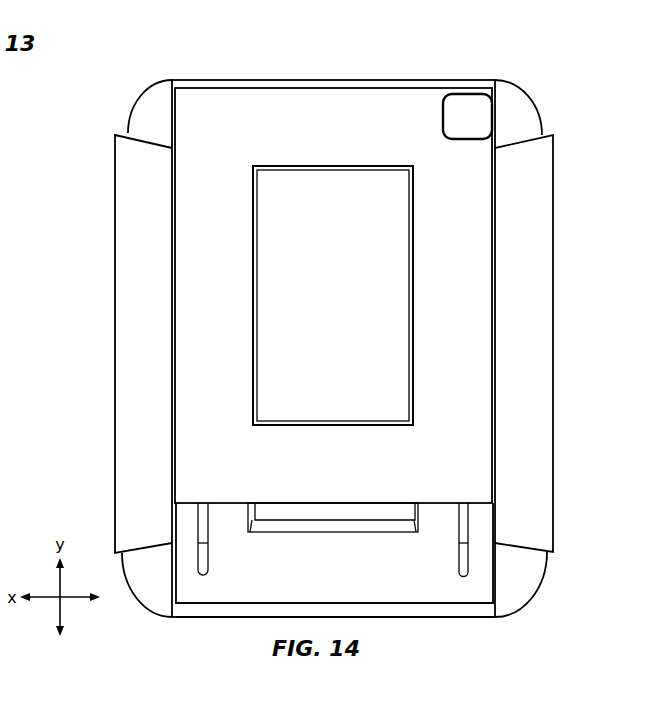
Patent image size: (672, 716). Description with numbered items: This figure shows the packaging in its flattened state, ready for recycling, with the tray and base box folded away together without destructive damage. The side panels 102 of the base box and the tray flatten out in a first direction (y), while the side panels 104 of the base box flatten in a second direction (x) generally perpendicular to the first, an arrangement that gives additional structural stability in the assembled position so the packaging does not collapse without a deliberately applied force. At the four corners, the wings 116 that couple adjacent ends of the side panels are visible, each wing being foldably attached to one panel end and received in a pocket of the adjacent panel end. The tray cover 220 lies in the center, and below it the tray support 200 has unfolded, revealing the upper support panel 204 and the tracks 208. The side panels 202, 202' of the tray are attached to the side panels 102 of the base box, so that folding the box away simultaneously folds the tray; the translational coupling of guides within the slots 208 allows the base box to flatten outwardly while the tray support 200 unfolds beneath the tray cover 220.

The side panels 102 is at (268, 80).
The side panels 104 is at (128, 361).
The wings 116 is at (143, 113).
The tray support 200 is at (433, 575).
The side panel 202 is at (325, 647).
The side panel 202' is at (333, 263).
The upper support panel 204 is at (370, 572).
The track 208 is at (205, 518).
The tray cover 220 is at (405, 108).